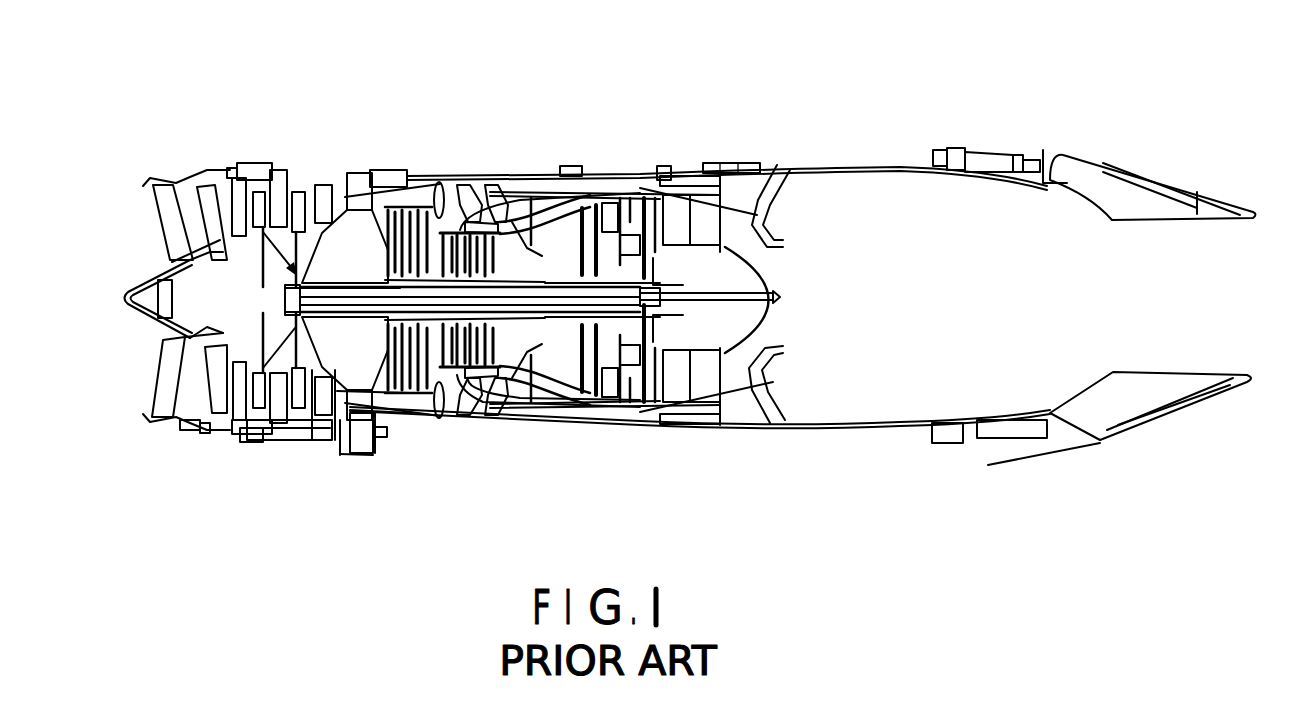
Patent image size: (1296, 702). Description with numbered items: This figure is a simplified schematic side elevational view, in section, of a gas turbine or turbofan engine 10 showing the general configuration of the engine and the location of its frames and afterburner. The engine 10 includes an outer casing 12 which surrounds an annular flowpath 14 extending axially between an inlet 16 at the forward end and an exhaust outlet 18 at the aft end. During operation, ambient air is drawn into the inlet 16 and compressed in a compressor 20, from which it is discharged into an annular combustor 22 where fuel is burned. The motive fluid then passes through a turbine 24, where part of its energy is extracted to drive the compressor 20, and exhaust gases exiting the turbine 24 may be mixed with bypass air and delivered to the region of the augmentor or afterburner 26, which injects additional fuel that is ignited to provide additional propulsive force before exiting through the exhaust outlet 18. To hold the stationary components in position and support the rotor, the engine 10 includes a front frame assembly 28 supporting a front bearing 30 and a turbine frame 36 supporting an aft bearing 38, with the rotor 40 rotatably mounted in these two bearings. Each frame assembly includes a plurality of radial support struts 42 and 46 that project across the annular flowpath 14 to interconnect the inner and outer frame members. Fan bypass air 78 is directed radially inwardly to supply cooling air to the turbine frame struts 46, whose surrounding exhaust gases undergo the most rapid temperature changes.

The gas turbine engine 10 is at (634, 88).
The outer casing 12 is at (581, 180).
The annular flowpath 14 is at (183, 178).
The inlet 16 is at (160, 227).
The exhaust outlet 18 is at (1175, 315).
The compressor 20 is at (176, 334).
The annular combustor 22 is at (557, 378).
The turbine 24 is at (660, 340).
The augmentor or afterburner 26 is at (783, 247).
The front frame assembly 28 is at (303, 166).
The front bearing 30 is at (225, 388).
The turbine frame 36 is at (679, 186).
The aft bearing 38 is at (672, 290).
The rotor 40 is at (490, 293).
The radial support struts 42 is at (313, 395).
The radial support struts 46 is at (677, 418).
The fan bypass air 78 is at (762, 195).